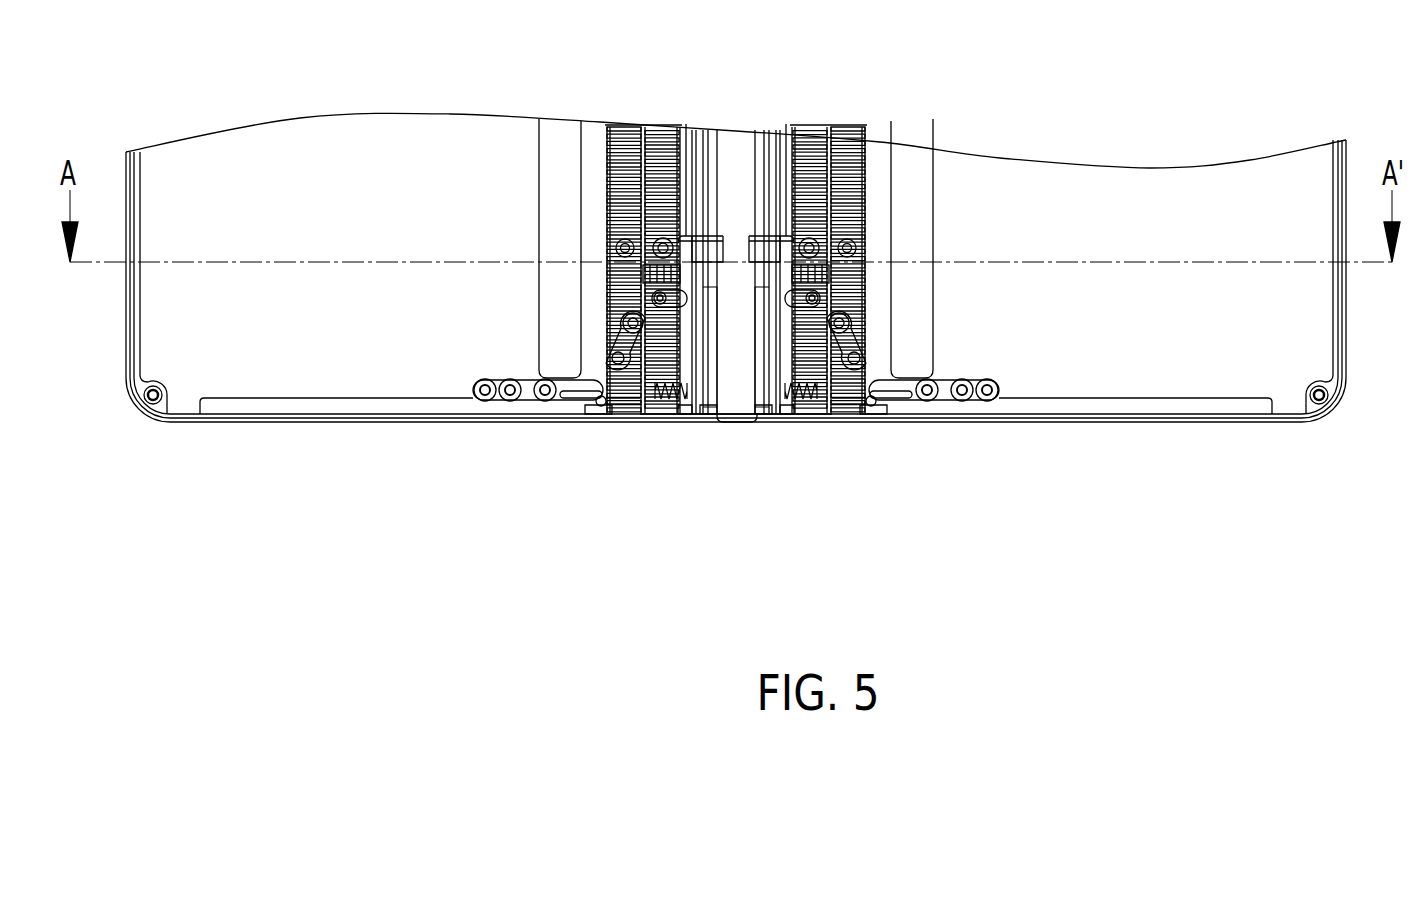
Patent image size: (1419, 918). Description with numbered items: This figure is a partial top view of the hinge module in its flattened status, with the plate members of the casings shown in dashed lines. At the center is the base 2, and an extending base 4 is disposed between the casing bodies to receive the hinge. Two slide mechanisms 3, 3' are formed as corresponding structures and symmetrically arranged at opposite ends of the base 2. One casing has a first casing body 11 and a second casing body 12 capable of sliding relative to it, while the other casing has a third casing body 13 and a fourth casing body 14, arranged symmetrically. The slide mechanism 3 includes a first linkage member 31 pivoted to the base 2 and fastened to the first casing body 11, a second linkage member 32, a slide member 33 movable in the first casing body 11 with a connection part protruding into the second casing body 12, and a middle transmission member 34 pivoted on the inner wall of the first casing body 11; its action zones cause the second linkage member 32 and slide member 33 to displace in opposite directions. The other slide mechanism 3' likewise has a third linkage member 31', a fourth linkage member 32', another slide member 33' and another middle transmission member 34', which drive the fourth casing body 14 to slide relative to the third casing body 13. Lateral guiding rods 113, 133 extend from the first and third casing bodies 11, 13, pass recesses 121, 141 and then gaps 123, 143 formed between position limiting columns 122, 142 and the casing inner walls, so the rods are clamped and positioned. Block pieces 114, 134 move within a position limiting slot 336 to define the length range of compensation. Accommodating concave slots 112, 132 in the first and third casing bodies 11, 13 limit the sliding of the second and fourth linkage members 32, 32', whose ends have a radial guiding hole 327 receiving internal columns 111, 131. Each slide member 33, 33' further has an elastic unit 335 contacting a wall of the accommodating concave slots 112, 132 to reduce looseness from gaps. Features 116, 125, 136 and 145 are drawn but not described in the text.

The base 2 is at (729, 442).
The slide mechanism 3 is at (544, 508).
The another slide mechanism 3' is at (928, 508).
The extending base 4 is at (735, 116).
The first casing body 11 is at (687, 157).
The second casing body 12 is at (190, 162).
The third casing body 13 is at (786, 157).
The fourth casing body 14 is at (1283, 158).
The first linkage member 31 is at (707, 239).
The third linkage member 31' is at (760, 239).
The second linkage member 32 is at (567, 219).
The fourth linkage member 32' is at (903, 219).
The slide member 33 is at (536, 431).
The another slide member 33' is at (936, 431).
The middle transmission member 34 is at (516, 211).
The another middle transmission member 34' is at (954, 211).
The internal column 111 is at (707, 418).
The accommodating concave slot 112 is at (683, 417).
The lateral guiding rod 113 is at (365, 407).
The block piece 114 is at (598, 418).
The first top plate 116 is at (633, 126).
The recess 121 is at (531, 392).
The position limiting column 122 is at (477, 398).
The gap 123 is at (495, 397).
The first side plate 125 is at (607, 148).
The internal column 131 is at (766, 418).
The accommodating concave slot 132 is at (790, 417).
The lateral guiding rod 133 is at (1110, 407).
The block piece 134 is at (876, 418).
The second top plate 136 is at (839, 126).
The recess 141 is at (941, 392).
The position limiting column 142 is at (995, 398).
The gap 143 is at (975, 397).
The second side plate 145 is at (865, 148).
The radial guiding hole 327 is at (746, 413).
The elastic unit 335 is at (677, 417).
The position limiting slot 336 is at (566, 395).